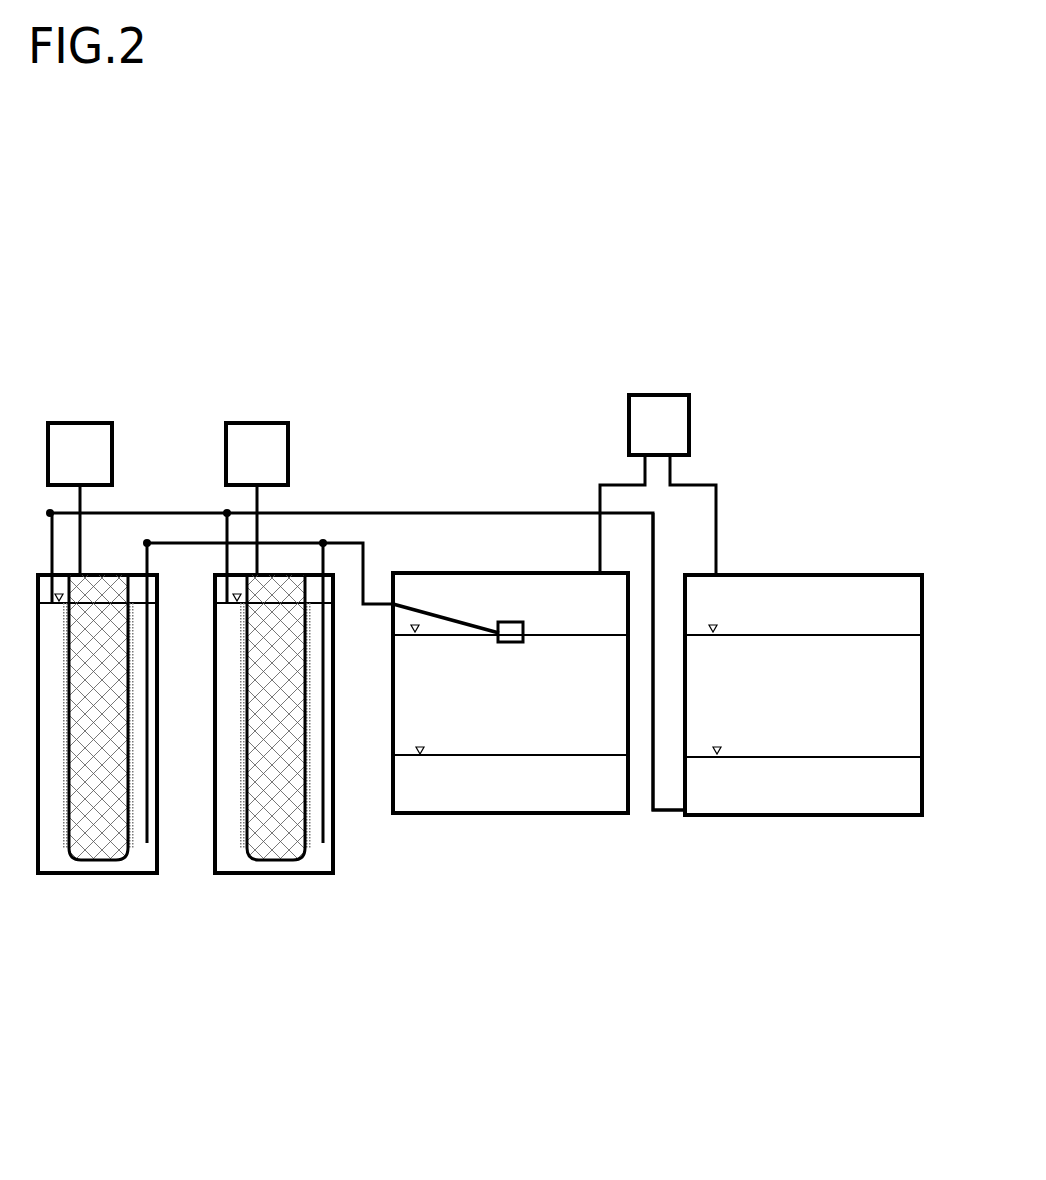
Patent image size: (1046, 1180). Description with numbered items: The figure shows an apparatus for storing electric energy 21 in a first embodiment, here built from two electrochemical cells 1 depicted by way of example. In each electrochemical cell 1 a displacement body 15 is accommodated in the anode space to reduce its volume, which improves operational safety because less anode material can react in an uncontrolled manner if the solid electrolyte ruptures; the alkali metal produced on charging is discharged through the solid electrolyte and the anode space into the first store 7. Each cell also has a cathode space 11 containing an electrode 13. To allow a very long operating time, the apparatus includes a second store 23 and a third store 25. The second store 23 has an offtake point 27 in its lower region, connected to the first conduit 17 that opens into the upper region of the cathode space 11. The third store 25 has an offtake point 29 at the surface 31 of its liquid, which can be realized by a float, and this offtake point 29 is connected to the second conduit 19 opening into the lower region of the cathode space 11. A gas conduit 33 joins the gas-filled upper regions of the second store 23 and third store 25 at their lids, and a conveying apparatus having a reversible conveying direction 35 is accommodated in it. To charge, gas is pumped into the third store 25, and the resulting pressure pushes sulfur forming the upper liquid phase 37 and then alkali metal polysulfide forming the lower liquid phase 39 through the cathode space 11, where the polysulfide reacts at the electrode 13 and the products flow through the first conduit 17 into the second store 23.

The electrochemical cell 1 is at (344, 659).
The first store 7 is at (255, 435).
The cathode space 11 is at (230, 863).
The electrode 13 is at (65, 838).
The displacement body 15 is at (265, 779).
The first conduit 17 is at (50, 553).
The second conduit 19 is at (149, 672).
The apparatus for storing electric energy 21 is at (657, 693).
The second store 23 is at (792, 817).
The third store 25 is at (657, 721).
The offtake point 27 is at (663, 813).
The offtake point 29 is at (442, 617).
The surface 31 is at (550, 633).
The gas conduit 33 is at (698, 482).
The conveying apparatus having a reversible conveying direction 35 is at (643, 415).
The upper liquid phase 37 is at (657, 667).
The lower liquid phase 39 is at (488, 815).